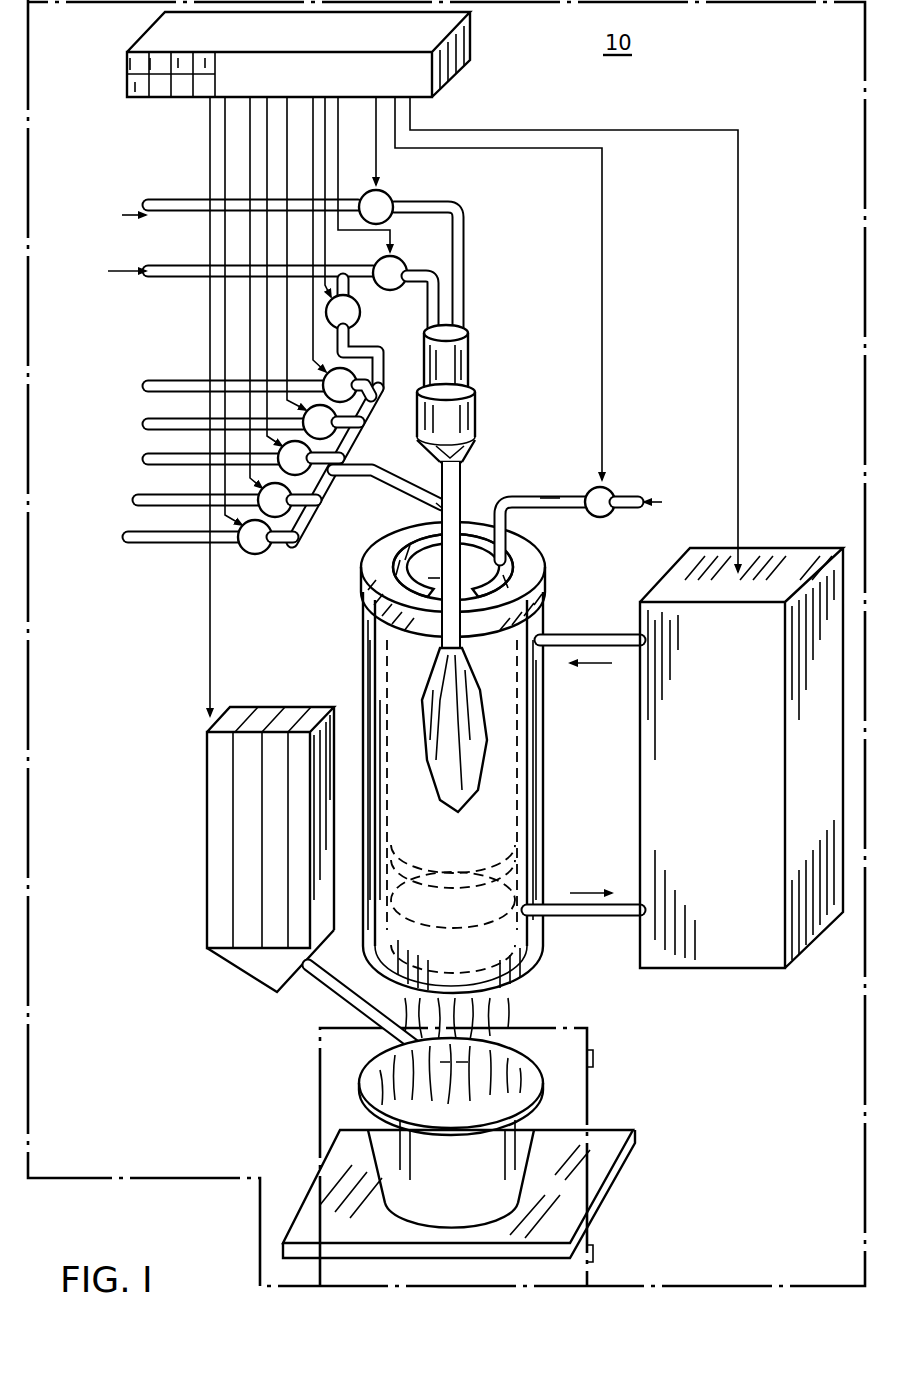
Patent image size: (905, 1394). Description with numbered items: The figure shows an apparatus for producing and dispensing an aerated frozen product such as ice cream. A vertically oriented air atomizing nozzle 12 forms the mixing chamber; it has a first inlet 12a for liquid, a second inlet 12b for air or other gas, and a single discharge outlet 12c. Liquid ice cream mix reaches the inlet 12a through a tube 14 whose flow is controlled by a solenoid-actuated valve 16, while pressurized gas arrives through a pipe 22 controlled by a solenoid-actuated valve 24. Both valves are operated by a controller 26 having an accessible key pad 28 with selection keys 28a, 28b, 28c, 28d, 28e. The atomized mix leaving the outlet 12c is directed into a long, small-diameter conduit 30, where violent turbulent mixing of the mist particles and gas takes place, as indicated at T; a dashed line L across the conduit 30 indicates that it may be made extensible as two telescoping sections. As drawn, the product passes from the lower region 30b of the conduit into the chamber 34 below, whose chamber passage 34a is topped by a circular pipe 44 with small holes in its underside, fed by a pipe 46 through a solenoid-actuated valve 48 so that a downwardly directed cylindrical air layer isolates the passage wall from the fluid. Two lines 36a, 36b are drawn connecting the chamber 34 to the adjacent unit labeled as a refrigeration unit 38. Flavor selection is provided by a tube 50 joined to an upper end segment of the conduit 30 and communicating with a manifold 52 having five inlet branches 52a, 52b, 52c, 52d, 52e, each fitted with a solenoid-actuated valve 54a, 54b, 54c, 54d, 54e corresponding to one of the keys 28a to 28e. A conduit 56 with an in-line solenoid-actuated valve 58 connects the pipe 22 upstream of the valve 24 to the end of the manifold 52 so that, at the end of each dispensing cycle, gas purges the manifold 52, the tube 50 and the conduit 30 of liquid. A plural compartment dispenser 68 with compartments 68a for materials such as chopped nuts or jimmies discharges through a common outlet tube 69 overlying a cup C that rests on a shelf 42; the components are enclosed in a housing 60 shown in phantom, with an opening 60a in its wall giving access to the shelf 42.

The air atomizing nozzle 12 is at (480, 388).
The first inlet 12a is at (470, 333).
The second inlet 12b is at (430, 328).
The discharge outlet 12c is at (472, 452).
The tube 14 is at (466, 216).
The solenoid-actuated valve 16 is at (386, 195).
The pipe 22 is at (342, 285).
The solenoid-actuated valve 24 is at (404, 262).
The controller 26 is at (465, 40).
The key pad 28 is at (104, 74).
The selection key 28a is at (130, 62).
The selection key 28b is at (152, 58).
The selection key 28c is at (182, 60).
The selection key 28d is at (205, 58).
The selection key 28e is at (137, 92).
The conduit 30 is at (462, 478).
The tube outlet / frozen stream 30b is at (440, 648).
The chamber 34 is at (447, 747).
The chamber passage 34a is at (380, 575).
The refrigerant supply line 36a is at (580, 633).
The refrigerant return line 36b is at (588, 925).
The refrigeration unit 38 is at (640, 820).
The shelf 42 is at (615, 1135).
The circular pipe 44 is at (525, 570).
The pipe 46 is at (545, 495).
The solenoid-actuated valve 48 is at (612, 490).
The tube 50 is at (387, 487).
The manifold 52 is at (318, 522).
The inlet branch 52a is at (190, 380).
The inlet branch 52b is at (165, 420).
The inlet branch 52c is at (158, 450).
The inlet branch 52d is at (190, 502).
The inlet branch 52e is at (145, 545).
The solenoid-actuated valve 54a is at (362, 400).
The solenoid-actuated valve 54b is at (352, 432).
The solenoid-actuated valve 54c is at (318, 495).
The solenoid-actuated valve 54d is at (290, 535).
The solenoid-actuated valve 54e is at (255, 556).
The conduit 56 is at (380, 372).
The solenoid-actuated valve 58 is at (360, 324).
The housing 60 is at (112, 1178).
The opening 60a is at (324, 1088).
The plural compartment dispenser 68 is at (237, 826).
The compartments 68a is at (262, 712).
The common outlet tube 69 is at (322, 990).
The cup C is at (370, 1120).
The turbulent mixing T is at (432, 503).
The dashed line L is at (430, 573).